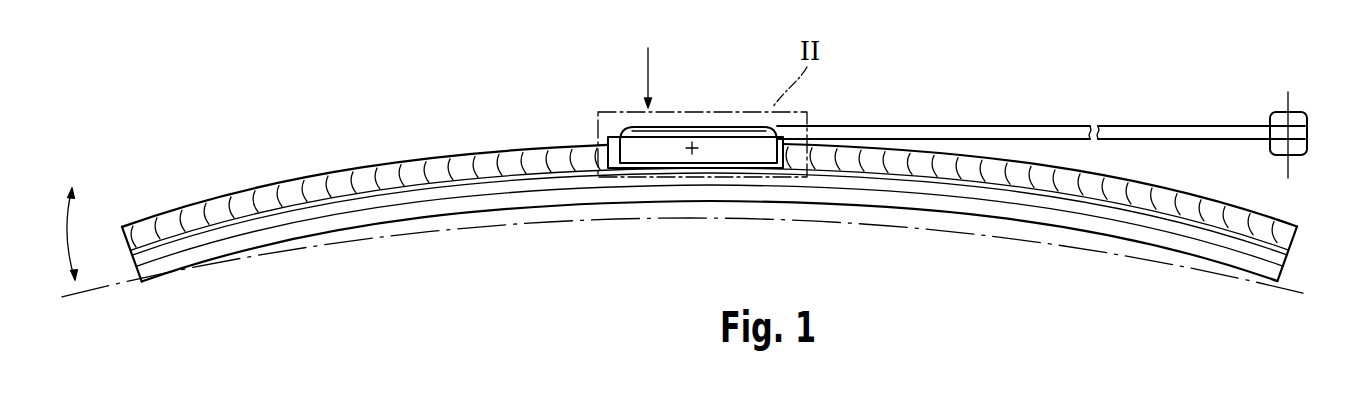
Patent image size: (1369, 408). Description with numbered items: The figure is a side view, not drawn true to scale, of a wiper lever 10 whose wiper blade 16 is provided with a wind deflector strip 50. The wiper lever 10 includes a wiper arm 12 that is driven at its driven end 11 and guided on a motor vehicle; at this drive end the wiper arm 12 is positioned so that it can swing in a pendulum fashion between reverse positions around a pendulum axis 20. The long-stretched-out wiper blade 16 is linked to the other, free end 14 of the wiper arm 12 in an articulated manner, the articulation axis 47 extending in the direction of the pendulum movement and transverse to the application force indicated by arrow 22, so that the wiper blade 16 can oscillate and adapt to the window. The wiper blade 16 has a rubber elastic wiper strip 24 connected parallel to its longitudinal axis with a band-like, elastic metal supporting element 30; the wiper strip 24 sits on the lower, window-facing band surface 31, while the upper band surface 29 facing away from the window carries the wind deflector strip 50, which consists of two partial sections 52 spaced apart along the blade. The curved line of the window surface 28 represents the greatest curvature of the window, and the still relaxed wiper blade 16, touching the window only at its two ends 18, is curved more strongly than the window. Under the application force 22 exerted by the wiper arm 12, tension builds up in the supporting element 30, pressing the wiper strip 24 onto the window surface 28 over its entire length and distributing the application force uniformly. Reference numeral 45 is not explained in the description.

The wiper lever 10 is at (588, 130).
The driven end of the wiper arm 11 is at (1283, 112).
The wiper arm 12 is at (978, 132).
The free end of the wiper arm 14 is at (672, 127).
The wiper blade 16 is at (552, 218).
The ends of the wiper blade 18 is at (133, 228).
The pendulum axis 20 is at (1287, 167).
The application force arrow 22 is at (647, 70).
The wiper strip 24 is at (867, 195).
The window surface 28 is at (643, 222).
The upper band surface 29 is at (1098, 193).
The supporting element 30 is at (1028, 193).
The lower band surface 31 is at (1138, 222).
The swivel direction 45 is at (72, 233).
The articulation axis 47 is at (693, 146).
The wind deflector strip 50 is at (495, 143).
The partial sections of the wind deflector strip 52 is at (435, 172).